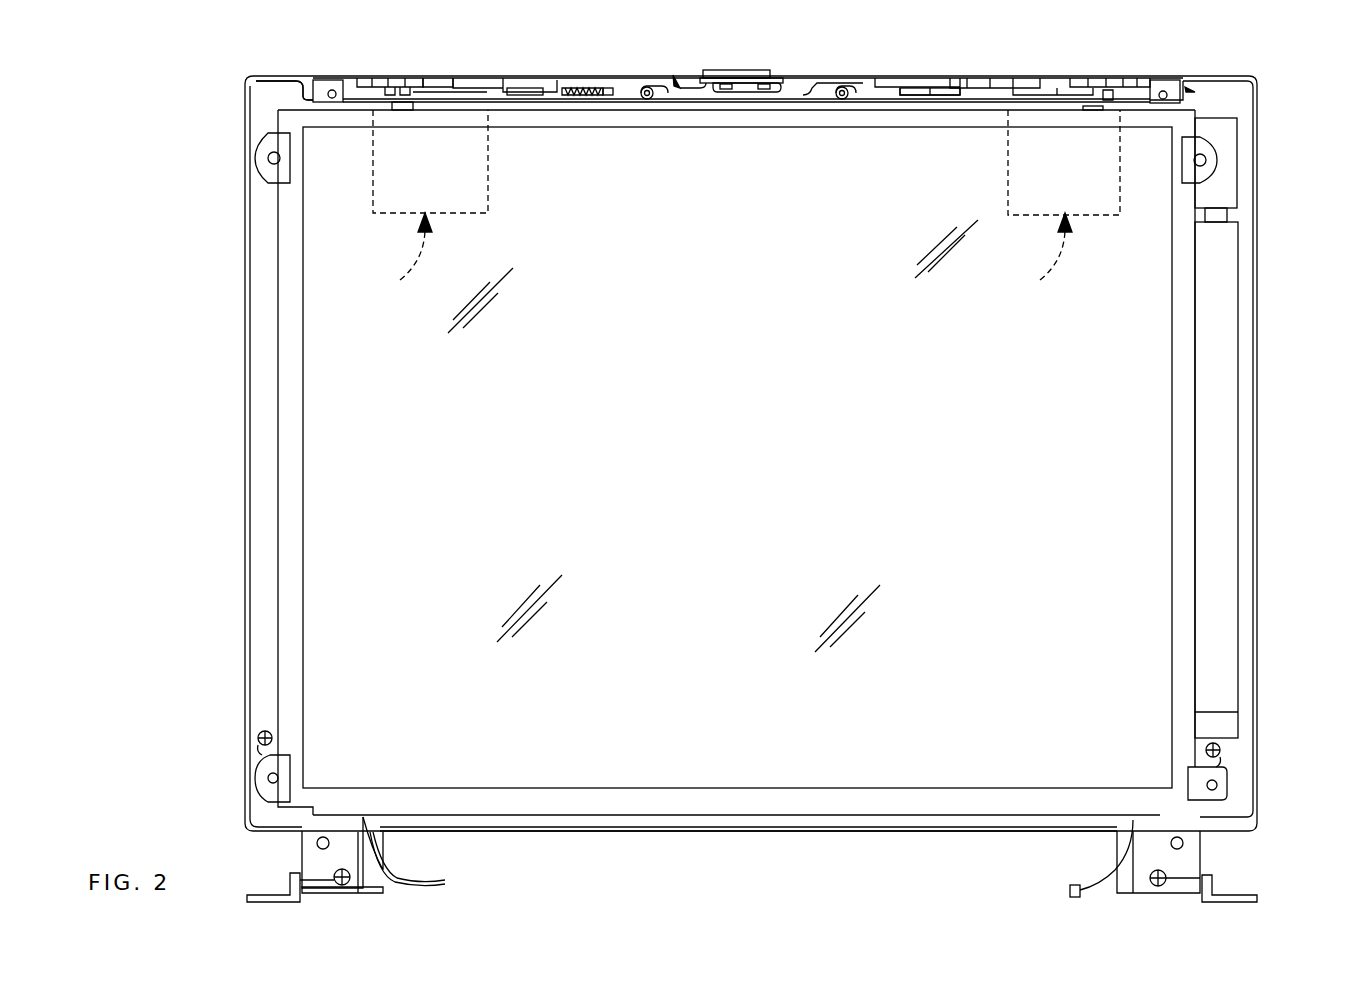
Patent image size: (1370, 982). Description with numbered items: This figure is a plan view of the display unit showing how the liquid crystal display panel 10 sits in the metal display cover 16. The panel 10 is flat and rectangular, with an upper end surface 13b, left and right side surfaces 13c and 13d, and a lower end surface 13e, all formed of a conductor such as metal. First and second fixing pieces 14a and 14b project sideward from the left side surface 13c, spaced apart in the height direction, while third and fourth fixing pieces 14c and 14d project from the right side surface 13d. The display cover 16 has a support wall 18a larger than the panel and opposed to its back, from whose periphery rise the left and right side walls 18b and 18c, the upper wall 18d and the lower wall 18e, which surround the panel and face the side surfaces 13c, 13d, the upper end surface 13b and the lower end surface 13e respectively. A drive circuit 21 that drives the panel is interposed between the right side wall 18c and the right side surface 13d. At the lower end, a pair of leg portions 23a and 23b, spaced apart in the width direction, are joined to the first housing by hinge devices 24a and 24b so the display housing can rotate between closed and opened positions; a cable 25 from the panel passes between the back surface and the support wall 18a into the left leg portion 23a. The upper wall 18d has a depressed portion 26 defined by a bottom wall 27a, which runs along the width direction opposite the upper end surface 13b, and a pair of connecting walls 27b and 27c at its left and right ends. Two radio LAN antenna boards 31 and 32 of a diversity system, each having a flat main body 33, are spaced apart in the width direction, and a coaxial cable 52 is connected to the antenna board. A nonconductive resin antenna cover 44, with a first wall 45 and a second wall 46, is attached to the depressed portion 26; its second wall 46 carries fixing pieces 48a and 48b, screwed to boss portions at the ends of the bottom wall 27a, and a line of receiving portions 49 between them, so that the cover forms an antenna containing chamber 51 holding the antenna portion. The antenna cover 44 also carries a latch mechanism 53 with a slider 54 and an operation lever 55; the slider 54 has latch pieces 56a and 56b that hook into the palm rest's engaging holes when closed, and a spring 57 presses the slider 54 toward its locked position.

The liquid crystal display panel 10 is at (1160, 515).
The upper end surface 13b is at (962, 110).
The left side surface 13c is at (278, 378).
The right side surface 13d is at (1195, 365).
The lower end surface 13e is at (708, 817).
The first fixing piece 14a is at (262, 172).
The second fixing piece 14b is at (270, 775).
The third fixing piece 14c is at (1217, 160).
The fourth fixing piece 14d is at (1215, 785).
The display cover 16 is at (1258, 632).
The support wall 18a is at (266, 290).
The left side wall 18b is at (246, 506).
The right side wall 18c is at (1258, 292).
The upper wall 18d is at (315, 77).
The lower wall 18e is at (915, 832).
The drive circuit 21 is at (1230, 572).
The left leg portion 23a is at (385, 850).
The right leg portion 23b is at (1117, 850).
The hinge device 24a is at (323, 873).
The hinge device 24b is at (1185, 882).
The cable 25 is at (445, 882).
The depressed portion 26 is at (810, 84).
The bottom wall 27a is at (848, 98).
The connecting wall 27b is at (300, 90).
The connecting wall 27c is at (1195, 88).
The antenna board 31 is at (406, 257).
The antenna board 32 is at (1046, 257).
The main body 33 is at (468, 213).
The antenna cover 44 is at (503, 80).
The first wall 45 is at (435, 84).
The second wall 46 is at (1045, 80).
The fixing piece 48a is at (335, 104).
The fixing piece 48b is at (1160, 104).
The receiving portions 49 is at (380, 80).
The antenna containing chamber 51 is at (640, 88).
The coaxial cable 52 is at (1070, 890).
The latch mechanism 53 is at (675, 78).
The slider 54 is at (750, 92).
The operation lever 55 is at (740, 72).
The latch piece 56a is at (530, 96).
The latch piece 56b is at (910, 96).
The spring 57 is at (578, 96).